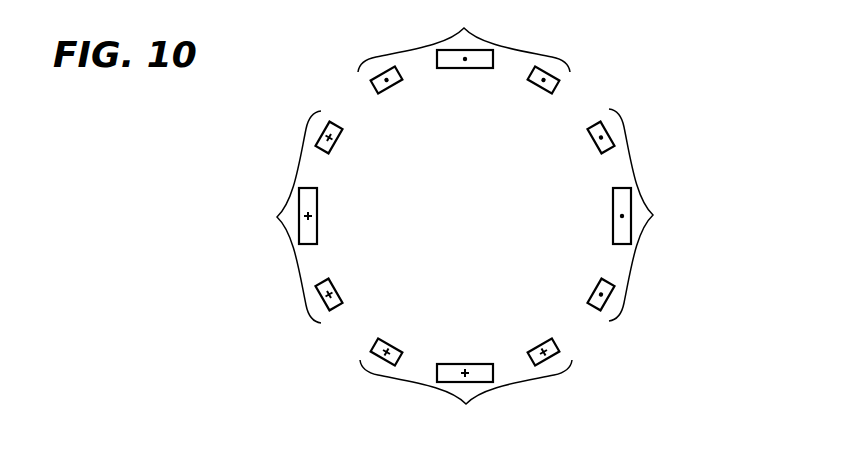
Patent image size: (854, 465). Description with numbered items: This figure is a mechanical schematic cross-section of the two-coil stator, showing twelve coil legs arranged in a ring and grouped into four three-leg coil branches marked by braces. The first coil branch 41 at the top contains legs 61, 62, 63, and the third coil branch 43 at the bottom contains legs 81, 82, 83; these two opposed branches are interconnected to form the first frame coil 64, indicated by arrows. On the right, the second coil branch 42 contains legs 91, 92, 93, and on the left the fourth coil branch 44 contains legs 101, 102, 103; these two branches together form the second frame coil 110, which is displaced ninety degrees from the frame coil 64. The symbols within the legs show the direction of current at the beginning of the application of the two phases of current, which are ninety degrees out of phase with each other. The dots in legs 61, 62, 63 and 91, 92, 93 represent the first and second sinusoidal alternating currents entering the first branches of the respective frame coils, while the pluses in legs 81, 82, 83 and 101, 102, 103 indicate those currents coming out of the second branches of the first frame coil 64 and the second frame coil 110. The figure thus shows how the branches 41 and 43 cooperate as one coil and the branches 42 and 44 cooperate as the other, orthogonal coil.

The first coil branch 41 is at (464, 36).
The second coil branch 42 is at (644, 215).
The third coil branch 43 is at (466, 396).
The fourth coil branch 44 is at (275, 217).
The leg 61 is at (399, 84).
The leg 62 is at (477, 68).
The leg 63 is at (537, 87).
The first frame coil 64 is at (572, 50).
The leg 81 is at (532, 351).
The leg 82 is at (478, 365).
The leg 83 is at (381, 346).
The leg 91 is at (587, 132).
The leg 92 is at (613, 202).
The leg 93 is at (597, 284).
The leg 101 is at (343, 287).
The leg 102 is at (313, 220).
The leg 103 is at (333, 145).
The second frame coil 110 is at (652, 274).